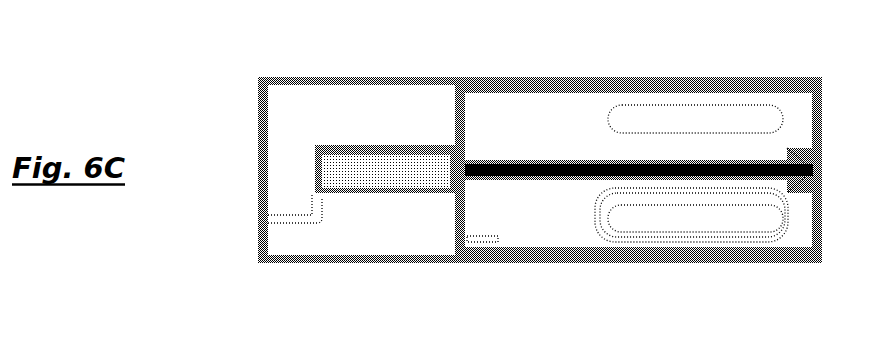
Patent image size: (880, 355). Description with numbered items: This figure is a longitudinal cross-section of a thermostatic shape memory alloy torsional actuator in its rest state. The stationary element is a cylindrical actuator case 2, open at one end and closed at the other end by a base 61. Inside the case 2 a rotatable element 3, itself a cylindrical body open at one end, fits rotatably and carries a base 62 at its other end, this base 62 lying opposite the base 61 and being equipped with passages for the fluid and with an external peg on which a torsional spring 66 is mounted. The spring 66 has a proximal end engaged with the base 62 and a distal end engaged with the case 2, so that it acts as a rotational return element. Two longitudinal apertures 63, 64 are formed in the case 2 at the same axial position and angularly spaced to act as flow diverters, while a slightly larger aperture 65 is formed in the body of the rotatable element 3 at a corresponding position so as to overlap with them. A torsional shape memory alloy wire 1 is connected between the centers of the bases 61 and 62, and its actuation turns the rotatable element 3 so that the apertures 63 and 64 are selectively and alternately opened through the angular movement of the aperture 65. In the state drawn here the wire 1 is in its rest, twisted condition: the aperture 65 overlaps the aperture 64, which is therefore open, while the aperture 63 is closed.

The torsional shape memory alloy wire 1 is at (507, 167).
The cylindrical actuator case 2 is at (413, 257).
The rotatable element 3 is at (540, 250).
The base 61 is at (817, 130).
The base 62 is at (457, 140).
The longitudinal aperture 63 is at (637, 120).
The longitudinal aperture 64 is at (693, 223).
The aperture 65 is at (770, 235).
The torsional spring 66 is at (353, 148).